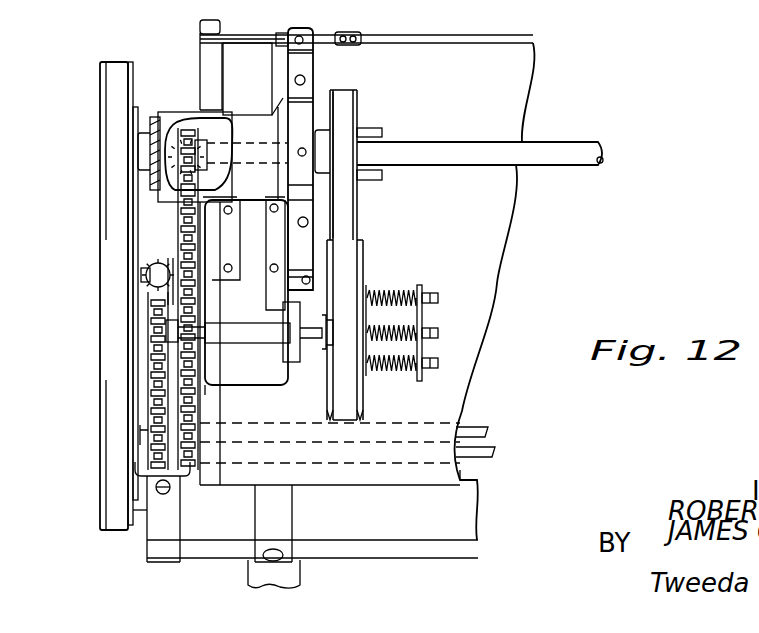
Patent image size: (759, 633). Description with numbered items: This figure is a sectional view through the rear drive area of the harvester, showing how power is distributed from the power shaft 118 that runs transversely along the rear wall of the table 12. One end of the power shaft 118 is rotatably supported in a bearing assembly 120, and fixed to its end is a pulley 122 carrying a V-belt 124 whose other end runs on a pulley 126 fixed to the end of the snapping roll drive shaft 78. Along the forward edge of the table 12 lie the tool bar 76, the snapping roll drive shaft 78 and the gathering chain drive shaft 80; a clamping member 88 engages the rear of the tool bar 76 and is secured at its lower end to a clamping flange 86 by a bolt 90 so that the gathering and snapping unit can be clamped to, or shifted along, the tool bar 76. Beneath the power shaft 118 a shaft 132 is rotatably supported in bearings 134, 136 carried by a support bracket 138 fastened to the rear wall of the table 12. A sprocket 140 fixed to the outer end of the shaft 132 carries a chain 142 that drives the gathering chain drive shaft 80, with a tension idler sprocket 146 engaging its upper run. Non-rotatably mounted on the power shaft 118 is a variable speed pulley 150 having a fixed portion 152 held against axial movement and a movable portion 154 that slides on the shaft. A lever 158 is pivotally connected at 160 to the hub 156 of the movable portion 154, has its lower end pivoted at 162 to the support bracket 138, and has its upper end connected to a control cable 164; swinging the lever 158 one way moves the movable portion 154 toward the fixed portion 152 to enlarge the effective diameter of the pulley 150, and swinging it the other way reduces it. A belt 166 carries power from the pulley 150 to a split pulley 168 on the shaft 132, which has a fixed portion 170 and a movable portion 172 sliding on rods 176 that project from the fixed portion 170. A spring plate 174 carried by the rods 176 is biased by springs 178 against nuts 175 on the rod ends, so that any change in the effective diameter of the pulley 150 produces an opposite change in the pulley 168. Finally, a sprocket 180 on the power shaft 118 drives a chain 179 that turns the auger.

The table 12 is at (513, 85).
The tool bar 76 is at (437, 547).
The snapping roll drive shaft 78 is at (483, 460).
The gathering chain drive shaft 80 is at (484, 428).
The clamping flange 86 is at (254, 585).
The clamping member 88 is at (268, 516).
The bolt 90 is at (275, 565).
The power shaft 118 is at (560, 155).
The bearing assembly 120 is at (146, 134).
The pulley 122 is at (100, 79).
The V-belt 124 is at (112, 254).
The pulley 126 is at (104, 470).
The shaft 132 is at (253, 332).
The bearing 134 is at (205, 327).
The bearing 136 is at (297, 356).
The support bracket 138 is at (230, 385).
The sprocket 140 is at (152, 334).
The chain 142 is at (152, 372).
The tension idler sprocket 146 is at (155, 262).
The variable speed pulley 150 is at (362, 98).
The fixed portion 152 is at (374, 128).
The movable portion 154 is at (335, 93).
The hub 156 is at (324, 142).
The lever 158 is at (288, 73).
The pivotal connection 160 is at (298, 152).
The pivot 162 is at (310, 280).
The control cable 164 is at (383, 35).
The belt 166 is at (343, 226).
The split pulley 168 is at (366, 284).
The fixed portion 170 is at (328, 422).
The movable portion 172 is at (363, 422).
The spring plate 174 is at (423, 312).
The nuts 175 is at (432, 297).
The rods 176 is at (436, 363).
The springs 178 is at (392, 367).
The chain 179 is at (180, 213).
The sprocket 180 is at (186, 128).